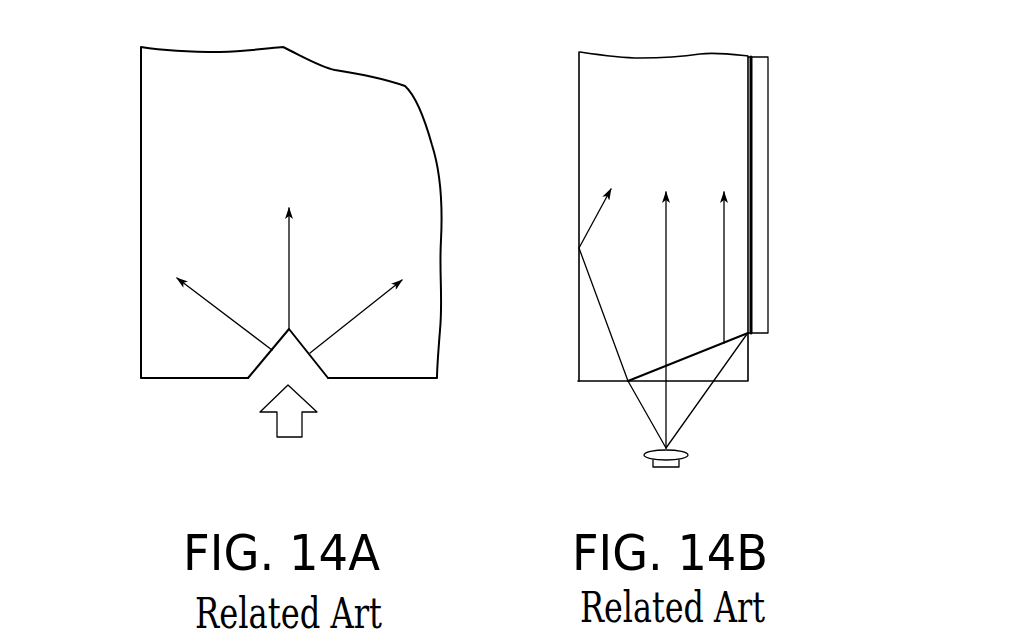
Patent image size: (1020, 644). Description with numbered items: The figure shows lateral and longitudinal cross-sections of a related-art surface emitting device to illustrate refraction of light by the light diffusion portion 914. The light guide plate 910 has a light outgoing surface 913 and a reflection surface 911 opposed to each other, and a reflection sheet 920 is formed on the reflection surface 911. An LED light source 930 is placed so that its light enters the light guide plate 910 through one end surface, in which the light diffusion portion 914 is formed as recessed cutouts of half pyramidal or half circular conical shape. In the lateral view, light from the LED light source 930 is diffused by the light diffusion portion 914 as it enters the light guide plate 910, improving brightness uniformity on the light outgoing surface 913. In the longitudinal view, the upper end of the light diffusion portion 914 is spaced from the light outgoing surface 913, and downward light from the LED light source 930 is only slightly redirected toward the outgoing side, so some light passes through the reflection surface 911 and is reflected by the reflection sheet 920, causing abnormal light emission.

In FIG. 14A, the light guide plate 910 is at (482, 40).
In FIG. 14B, the light guide plate 910 is at (580, 52).
In FIG. 14A, the reflection surface 911 is at (155, 167).
In FIG. 14B, the reflection surface 911 is at (750, 270).
In FIG. 14B, the light outgoing surface 913 is at (580, 165).
In FIG. 14A, the light diffusion portion 914 is at (279, 349).
In FIG. 14B, the light diffusion portion 914 is at (627, 384).
In FIG. 14B, the reflection sheet 920 is at (768, 200).
In FIG. 14B, the LED light source 930 is at (688, 455).